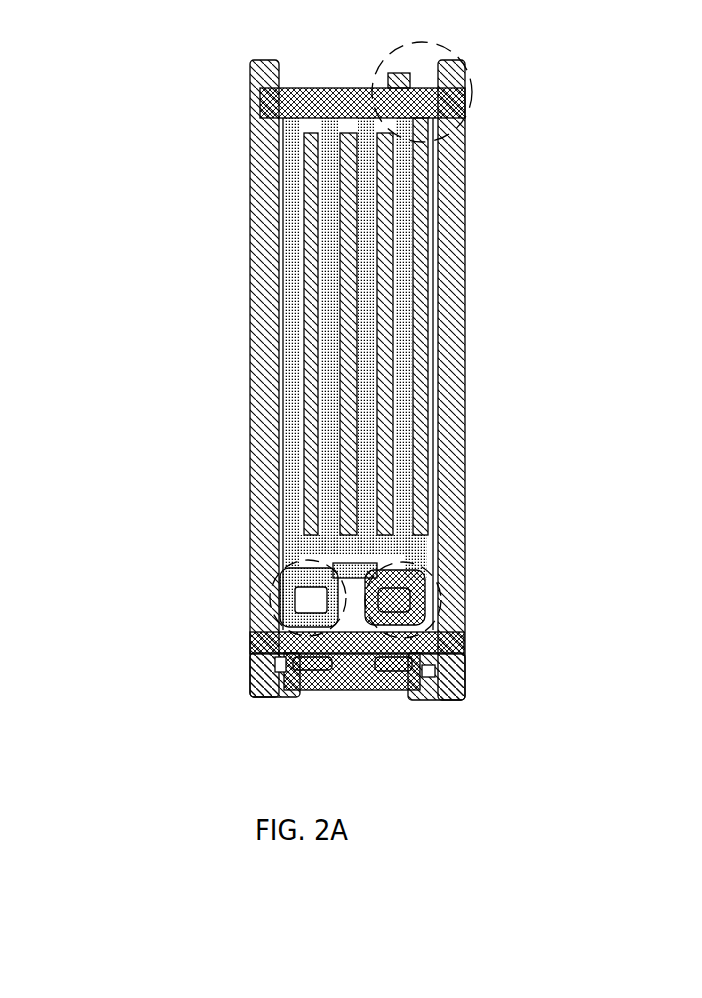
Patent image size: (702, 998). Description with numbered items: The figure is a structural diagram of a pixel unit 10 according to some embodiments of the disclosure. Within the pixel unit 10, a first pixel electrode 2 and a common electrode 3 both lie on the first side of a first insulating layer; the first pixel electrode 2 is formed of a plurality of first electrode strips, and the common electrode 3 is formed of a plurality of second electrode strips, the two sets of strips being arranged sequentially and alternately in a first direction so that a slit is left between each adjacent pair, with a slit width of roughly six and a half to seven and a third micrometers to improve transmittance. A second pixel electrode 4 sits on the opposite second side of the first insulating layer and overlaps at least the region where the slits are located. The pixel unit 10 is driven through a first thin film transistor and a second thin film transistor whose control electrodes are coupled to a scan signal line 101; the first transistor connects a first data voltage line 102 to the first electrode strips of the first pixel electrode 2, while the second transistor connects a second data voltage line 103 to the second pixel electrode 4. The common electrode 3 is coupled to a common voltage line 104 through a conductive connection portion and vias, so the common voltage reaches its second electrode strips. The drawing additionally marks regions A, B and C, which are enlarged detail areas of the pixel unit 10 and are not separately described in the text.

The pixel unit 10 is at (82, 57).
The scan signal line 101 is at (348, 672).
The first data voltage line 102 is at (263, 272).
The second data voltage line 103 is at (450, 388).
The common voltage line 104 is at (288, 95).
The first pixel electrode 2 is at (400, 500).
The common electrode 3 is at (417, 467).
The second pixel electrode 4 is at (418, 552).
The detail region A is at (275, 597).
The detail region B is at (440, 612).
The detail region C is at (468, 82).